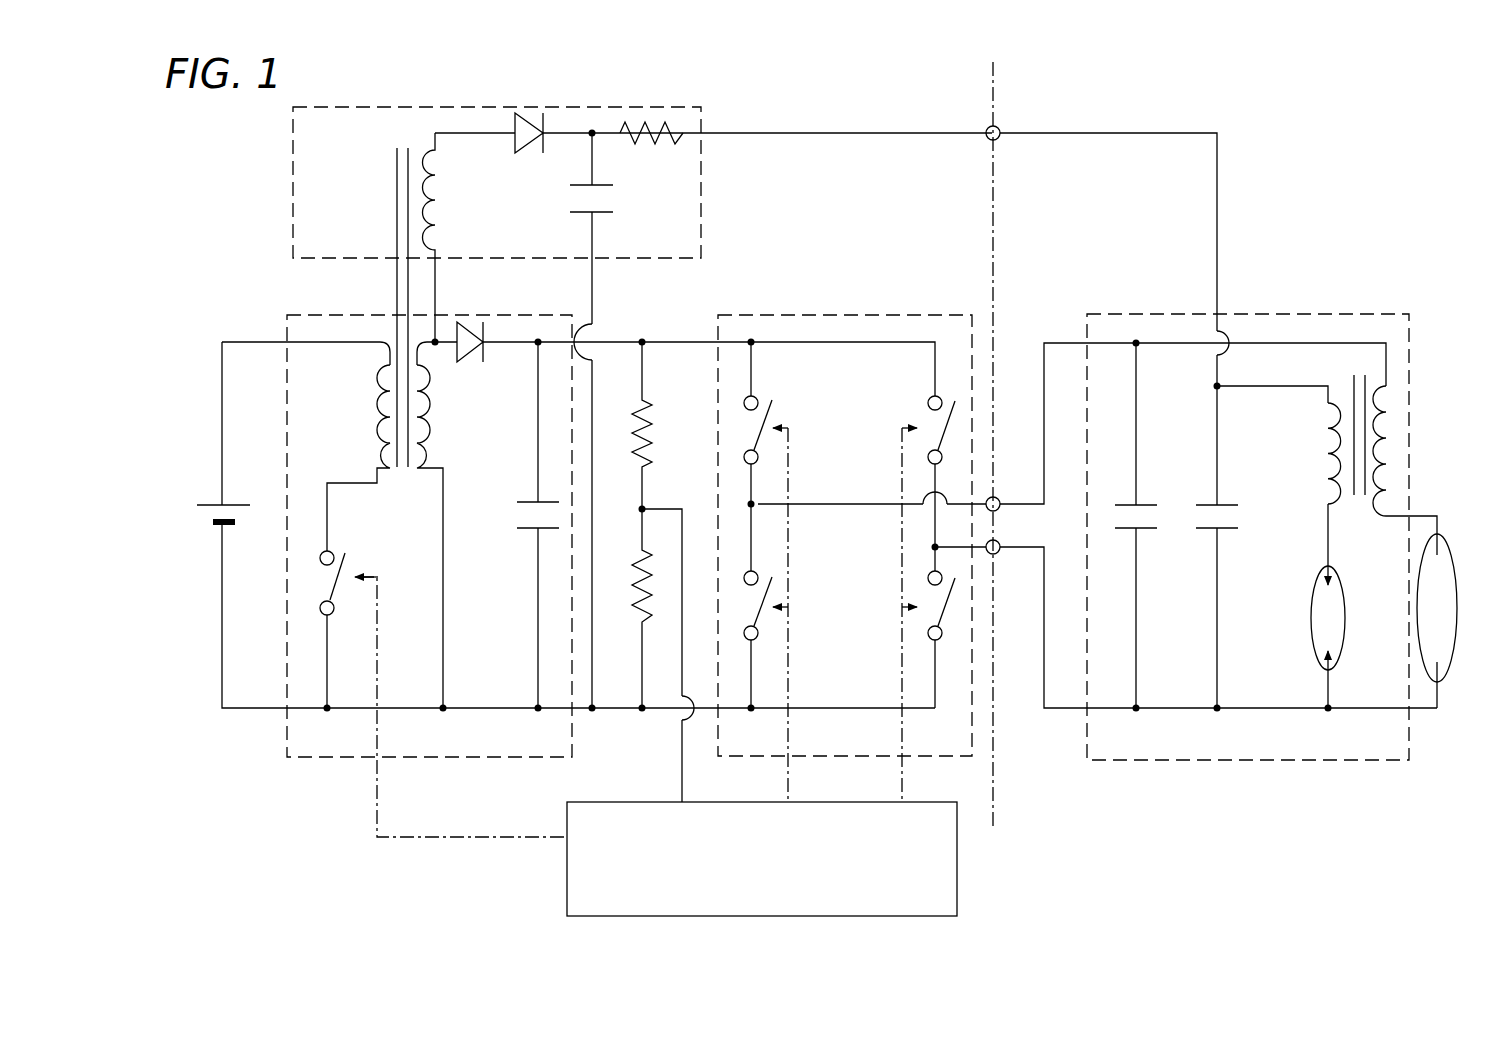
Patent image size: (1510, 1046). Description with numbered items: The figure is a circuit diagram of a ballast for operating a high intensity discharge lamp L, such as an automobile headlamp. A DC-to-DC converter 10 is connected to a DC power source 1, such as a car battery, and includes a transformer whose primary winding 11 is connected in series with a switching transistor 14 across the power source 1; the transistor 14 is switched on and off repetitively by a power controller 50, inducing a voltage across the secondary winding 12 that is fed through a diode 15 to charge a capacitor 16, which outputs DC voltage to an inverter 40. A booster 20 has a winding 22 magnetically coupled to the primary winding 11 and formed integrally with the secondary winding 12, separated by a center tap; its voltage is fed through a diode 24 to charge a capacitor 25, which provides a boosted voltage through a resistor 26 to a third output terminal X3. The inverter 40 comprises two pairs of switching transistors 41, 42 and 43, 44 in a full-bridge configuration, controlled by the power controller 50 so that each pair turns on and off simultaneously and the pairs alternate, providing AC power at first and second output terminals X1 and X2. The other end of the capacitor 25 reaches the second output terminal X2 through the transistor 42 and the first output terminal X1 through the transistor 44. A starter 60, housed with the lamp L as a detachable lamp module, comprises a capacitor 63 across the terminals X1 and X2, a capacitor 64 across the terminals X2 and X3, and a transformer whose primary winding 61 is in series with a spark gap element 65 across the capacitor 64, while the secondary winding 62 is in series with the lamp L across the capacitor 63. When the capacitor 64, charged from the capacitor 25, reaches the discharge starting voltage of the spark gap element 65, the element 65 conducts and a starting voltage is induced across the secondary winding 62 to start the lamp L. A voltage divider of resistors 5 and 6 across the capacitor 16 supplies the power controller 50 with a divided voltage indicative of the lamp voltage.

The DC power source 1 is at (205, 519).
The DC-to-DC converter 10 is at (287, 758).
The primary winding 11 is at (375, 403).
The secondary winding 12 is at (437, 402).
The switching transistor 14 is at (320, 580).
The diode 15 is at (472, 370).
The capacitor 16 is at (512, 515).
The booster 20 is at (291, 217).
The winding 22 is at (442, 185).
The diode 24 is at (532, 110).
The capacitor 25 is at (622, 197).
The resistor 26 is at (650, 118).
The resistor 5 is at (627, 425).
The resistor 6 is at (625, 580).
The inverter 40 is at (822, 314).
The switching transistor 41 is at (777, 410).
The switching transistor 42 is at (915, 620).
The switching transistor 43 is at (922, 415).
The switching transistor 44 is at (770, 622).
The power controller 50 is at (959, 862).
The starter 60 is at (1308, 313).
The primary winding 61 is at (1327, 421).
The secondary winding 62 is at (1389, 424).
The capacitor 63 is at (1105, 527).
The capacitor 64 is at (1202, 521).
The spark gap element 65 is at (1304, 623).
The discharge lamp L is at (1465, 589).
The first output terminal X1 is at (1010, 488).
The second output terminal X2 is at (1010, 569).
The third output terminal X3 is at (1011, 151).